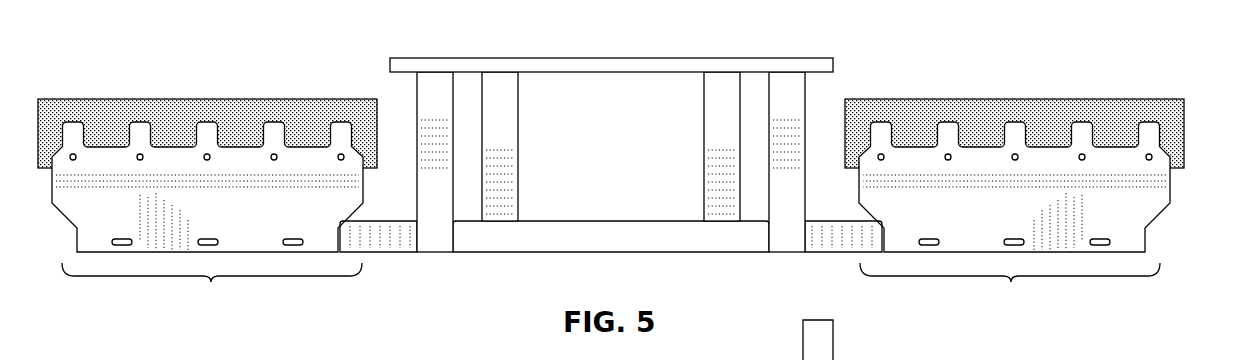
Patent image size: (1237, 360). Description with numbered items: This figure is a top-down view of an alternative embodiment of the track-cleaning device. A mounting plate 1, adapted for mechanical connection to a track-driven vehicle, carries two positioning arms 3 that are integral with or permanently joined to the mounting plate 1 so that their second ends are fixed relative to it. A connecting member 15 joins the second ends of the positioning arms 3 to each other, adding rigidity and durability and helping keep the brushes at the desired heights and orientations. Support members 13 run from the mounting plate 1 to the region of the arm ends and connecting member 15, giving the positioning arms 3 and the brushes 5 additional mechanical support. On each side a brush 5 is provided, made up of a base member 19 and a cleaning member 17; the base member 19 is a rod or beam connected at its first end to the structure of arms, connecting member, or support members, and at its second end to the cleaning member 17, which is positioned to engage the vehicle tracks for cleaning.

The mounting plate 1 is at (833, 60).
The positioning arm 3 is at (498, 117).
The brush 5 is at (611, 213).
The support member 13 is at (435, 78).
The connecting member 15 is at (602, 232).
The cleaning member 17 is at (190, 99).
The base member 19 is at (372, 232).